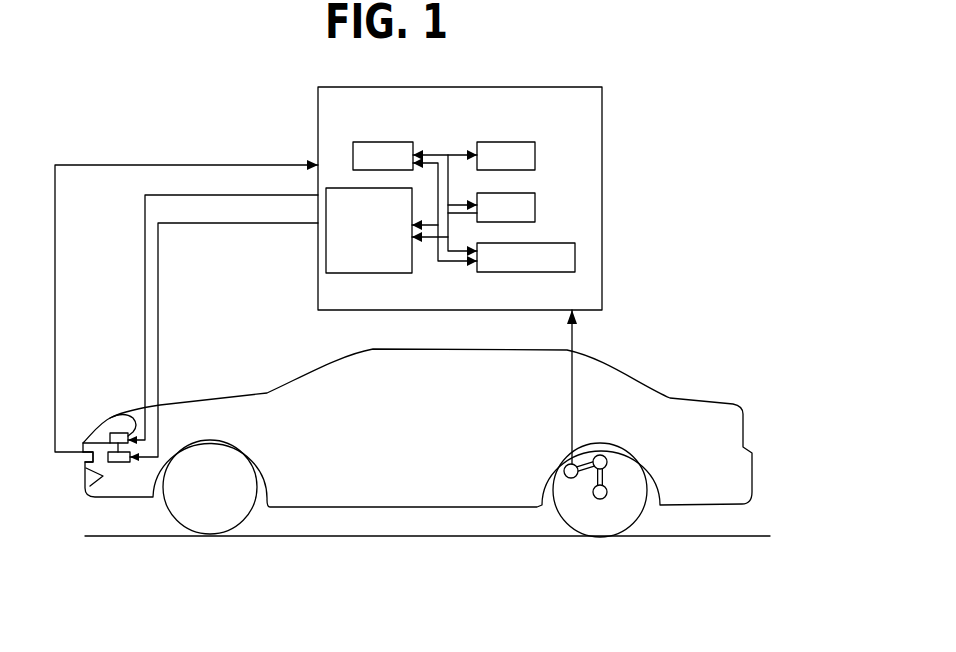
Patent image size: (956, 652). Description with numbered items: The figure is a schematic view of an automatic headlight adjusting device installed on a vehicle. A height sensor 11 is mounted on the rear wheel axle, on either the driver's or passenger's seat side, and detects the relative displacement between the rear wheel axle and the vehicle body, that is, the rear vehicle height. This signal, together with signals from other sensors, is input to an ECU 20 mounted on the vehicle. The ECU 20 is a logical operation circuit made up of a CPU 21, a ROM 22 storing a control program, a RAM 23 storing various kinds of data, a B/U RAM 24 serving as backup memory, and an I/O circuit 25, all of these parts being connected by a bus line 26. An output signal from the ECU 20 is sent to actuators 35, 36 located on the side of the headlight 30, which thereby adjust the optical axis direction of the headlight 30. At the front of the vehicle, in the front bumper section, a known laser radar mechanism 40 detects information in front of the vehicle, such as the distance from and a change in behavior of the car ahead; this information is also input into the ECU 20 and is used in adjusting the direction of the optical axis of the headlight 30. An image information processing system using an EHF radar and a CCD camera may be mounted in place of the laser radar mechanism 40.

The height sensor 11 is at (572, 479).
The ECU 20 is at (318, 152).
The CPU 21 is at (395, 142).
The ROM 22 is at (515, 142).
The RAM 23 is at (515, 193).
The B/U RAM 24 is at (527, 243).
The I/O circuit 25 is at (326, 263).
The bus line 26 is at (450, 262).
The headlight 30 is at (113, 422).
The actuator 35 is at (109, 437).
The actuator 36 is at (118, 463).
The laser radar mechanism 40 is at (87, 474).